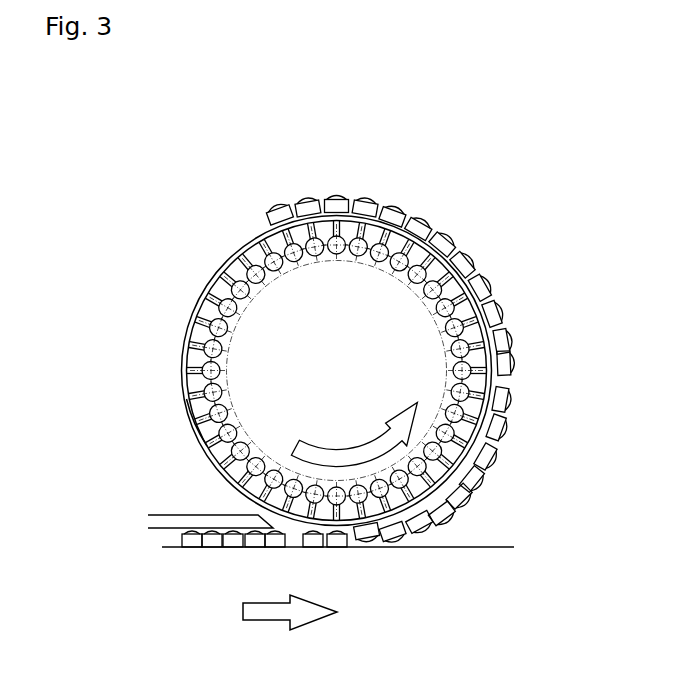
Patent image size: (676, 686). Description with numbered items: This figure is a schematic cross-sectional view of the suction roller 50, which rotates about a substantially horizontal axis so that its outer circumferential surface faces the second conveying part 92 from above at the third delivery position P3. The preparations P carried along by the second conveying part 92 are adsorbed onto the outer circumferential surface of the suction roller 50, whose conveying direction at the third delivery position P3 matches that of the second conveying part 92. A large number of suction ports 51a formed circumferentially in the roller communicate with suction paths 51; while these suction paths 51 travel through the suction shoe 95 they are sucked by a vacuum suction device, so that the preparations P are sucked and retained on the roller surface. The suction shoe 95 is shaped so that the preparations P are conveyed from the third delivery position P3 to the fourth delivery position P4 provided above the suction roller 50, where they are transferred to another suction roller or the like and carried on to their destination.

The suction roller 50 is at (296, 316).
The suction paths 51 is at (223, 413).
The suction ports 51a is at (193, 423).
The suction shoe 95 is at (445, 368).
The second conveying part 92 is at (513, 547).
The preparations P is at (413, 217).
The third delivery position P3 is at (363, 545).
The fourth delivery position P4 is at (286, 200).